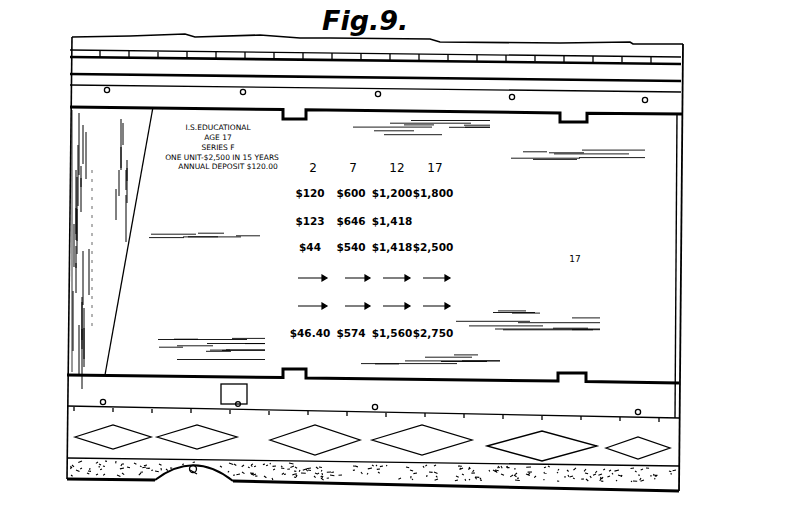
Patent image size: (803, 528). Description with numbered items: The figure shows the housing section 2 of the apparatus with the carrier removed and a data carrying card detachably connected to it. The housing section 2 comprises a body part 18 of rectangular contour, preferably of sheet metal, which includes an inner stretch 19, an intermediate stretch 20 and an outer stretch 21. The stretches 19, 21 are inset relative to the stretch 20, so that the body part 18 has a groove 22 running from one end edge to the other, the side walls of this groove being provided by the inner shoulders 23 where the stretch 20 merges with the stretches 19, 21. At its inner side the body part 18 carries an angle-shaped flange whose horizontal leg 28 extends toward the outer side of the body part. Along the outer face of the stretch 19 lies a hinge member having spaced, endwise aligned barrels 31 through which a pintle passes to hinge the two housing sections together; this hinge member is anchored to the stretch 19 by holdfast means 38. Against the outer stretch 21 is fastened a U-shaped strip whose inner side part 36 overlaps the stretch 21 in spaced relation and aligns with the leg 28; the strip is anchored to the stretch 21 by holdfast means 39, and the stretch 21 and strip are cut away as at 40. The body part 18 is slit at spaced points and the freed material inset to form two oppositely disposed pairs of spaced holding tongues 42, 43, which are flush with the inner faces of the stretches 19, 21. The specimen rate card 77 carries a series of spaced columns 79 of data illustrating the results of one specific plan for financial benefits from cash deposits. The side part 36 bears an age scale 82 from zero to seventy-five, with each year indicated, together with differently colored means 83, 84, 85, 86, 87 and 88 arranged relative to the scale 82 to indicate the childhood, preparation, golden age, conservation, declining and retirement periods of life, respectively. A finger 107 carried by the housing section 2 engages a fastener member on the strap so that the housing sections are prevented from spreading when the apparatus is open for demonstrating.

The housing section 2 is at (680, 318).
The body part 18 is at (99, 197).
The inner stretch 19 is at (437, 98).
The intermediate stretch 20 is at (88, 154).
The outer stretch 21 is at (73, 392).
The groove 22 is at (83, 240).
The inner shoulders 23 is at (103, 108).
The horizontal leg 28 is at (205, 80).
The barrels 31 is at (169, 51).
The inner side part 36 is at (665, 462).
The holdfast means 38 is at (649, 100).
The holdfast means 39 is at (641, 411).
The cutout 40 is at (226, 473).
The holding tongues 42 is at (302, 119).
The holding tongues 43 is at (302, 372).
The rate card 77 is at (657, 193).
The columns of data 79 is at (448, 223).
The age scale 82 is at (240, 418).
The childhood period indicator 83 is at (113, 440).
The preparation period indicator 84 is at (184, 437).
The golden age period indicator 85 is at (315, 440).
The conservation period indicator 86 is at (422, 440).
The declining period indicator 87 is at (542, 446).
The retirement period indicator 88 is at (638, 448).
The finger 107 is at (192, 474).